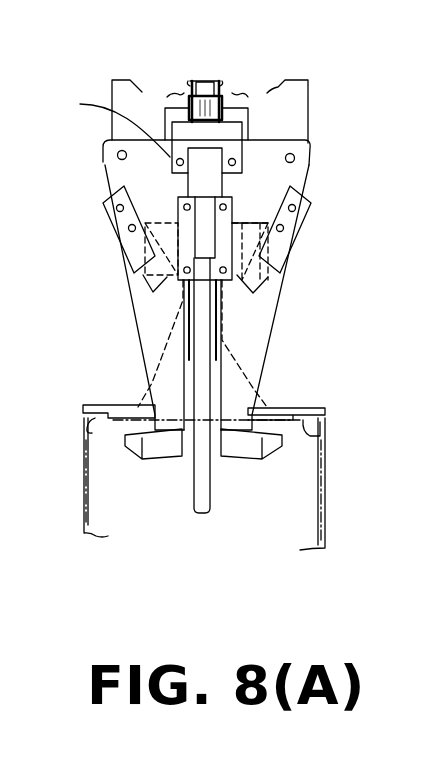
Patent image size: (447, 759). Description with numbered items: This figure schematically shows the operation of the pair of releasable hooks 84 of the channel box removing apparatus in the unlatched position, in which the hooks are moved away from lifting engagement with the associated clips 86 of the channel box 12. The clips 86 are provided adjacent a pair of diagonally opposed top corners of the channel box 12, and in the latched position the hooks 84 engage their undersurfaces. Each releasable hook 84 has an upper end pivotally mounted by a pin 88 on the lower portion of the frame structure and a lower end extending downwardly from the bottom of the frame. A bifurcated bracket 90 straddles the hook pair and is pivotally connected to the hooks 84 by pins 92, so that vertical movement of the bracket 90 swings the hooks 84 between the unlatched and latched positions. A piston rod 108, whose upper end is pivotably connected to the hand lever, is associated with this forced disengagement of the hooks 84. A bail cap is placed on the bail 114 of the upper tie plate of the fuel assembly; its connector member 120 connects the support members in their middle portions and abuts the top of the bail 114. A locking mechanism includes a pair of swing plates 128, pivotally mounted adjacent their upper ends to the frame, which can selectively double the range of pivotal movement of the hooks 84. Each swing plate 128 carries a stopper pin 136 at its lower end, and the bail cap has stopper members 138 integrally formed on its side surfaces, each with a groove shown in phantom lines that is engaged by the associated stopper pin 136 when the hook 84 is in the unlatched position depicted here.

The channel box 12 is at (327, 500).
The releasable hook 84 is at (145, 325).
The clip 86 is at (90, 427).
The pin 88 is at (118, 156).
The bifurcated bracket 90 is at (227, 135).
The pin 92 is at (106, 124).
The piston rod 108 is at (218, 88).
The bail 114 is at (207, 505).
The connector member 120 is at (207, 210).
The swing plate 128 is at (303, 227).
The stopper pin 136 is at (233, 282).
The stopper member 138 is at (266, 262).